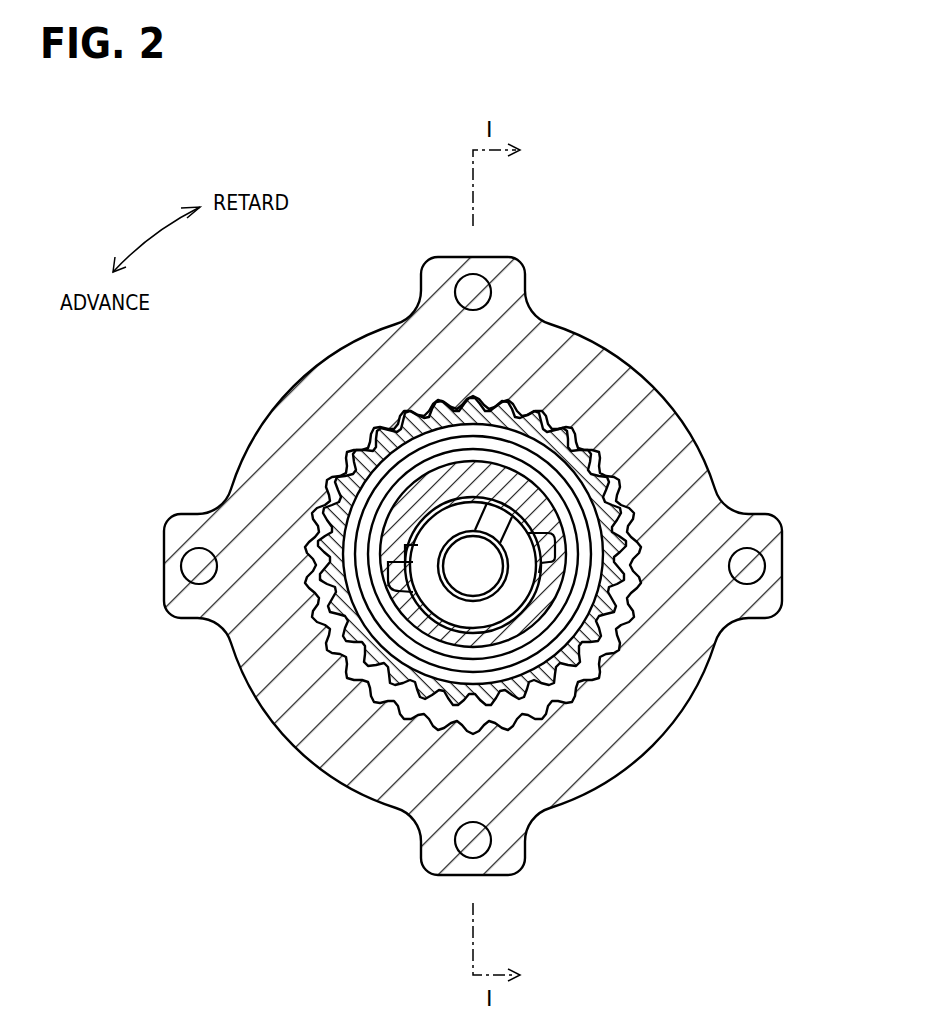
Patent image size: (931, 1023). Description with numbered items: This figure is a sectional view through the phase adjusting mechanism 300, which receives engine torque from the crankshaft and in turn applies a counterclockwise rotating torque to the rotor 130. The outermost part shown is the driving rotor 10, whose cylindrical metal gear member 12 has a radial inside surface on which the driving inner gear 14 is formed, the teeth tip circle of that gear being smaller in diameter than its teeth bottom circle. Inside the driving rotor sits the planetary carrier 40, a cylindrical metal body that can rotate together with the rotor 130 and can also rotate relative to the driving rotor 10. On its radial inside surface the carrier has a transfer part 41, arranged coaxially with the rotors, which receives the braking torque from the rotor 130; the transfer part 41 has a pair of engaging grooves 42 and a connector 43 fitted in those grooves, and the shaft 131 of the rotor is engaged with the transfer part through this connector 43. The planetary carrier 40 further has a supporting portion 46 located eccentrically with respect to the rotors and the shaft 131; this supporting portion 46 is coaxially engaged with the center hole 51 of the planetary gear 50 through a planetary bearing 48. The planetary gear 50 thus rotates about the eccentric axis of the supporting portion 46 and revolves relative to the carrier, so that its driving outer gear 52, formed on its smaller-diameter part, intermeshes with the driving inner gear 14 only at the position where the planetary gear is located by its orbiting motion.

The driving rotor 10 is at (342, 375).
The gear member 12 is at (475, 565).
The driving inner gear 14 is at (342, 470).
The planetary carrier 40 is at (398, 643).
The transfer part 41 is at (405, 552).
The engaging grooves 42 is at (552, 547).
The connector 43 is at (510, 603).
The supporting portion 46 is at (383, 523).
The planetary bearing 48 is at (588, 592).
The planetary gear 50 is at (337, 488).
The center hole 51 is at (519, 437).
The driving outer gear 52 is at (475, 555).
The rotor 130 is at (453, 537).
The shaft 131 is at (477, 549).
The phase adjusting mechanism 300 is at (460, 564).